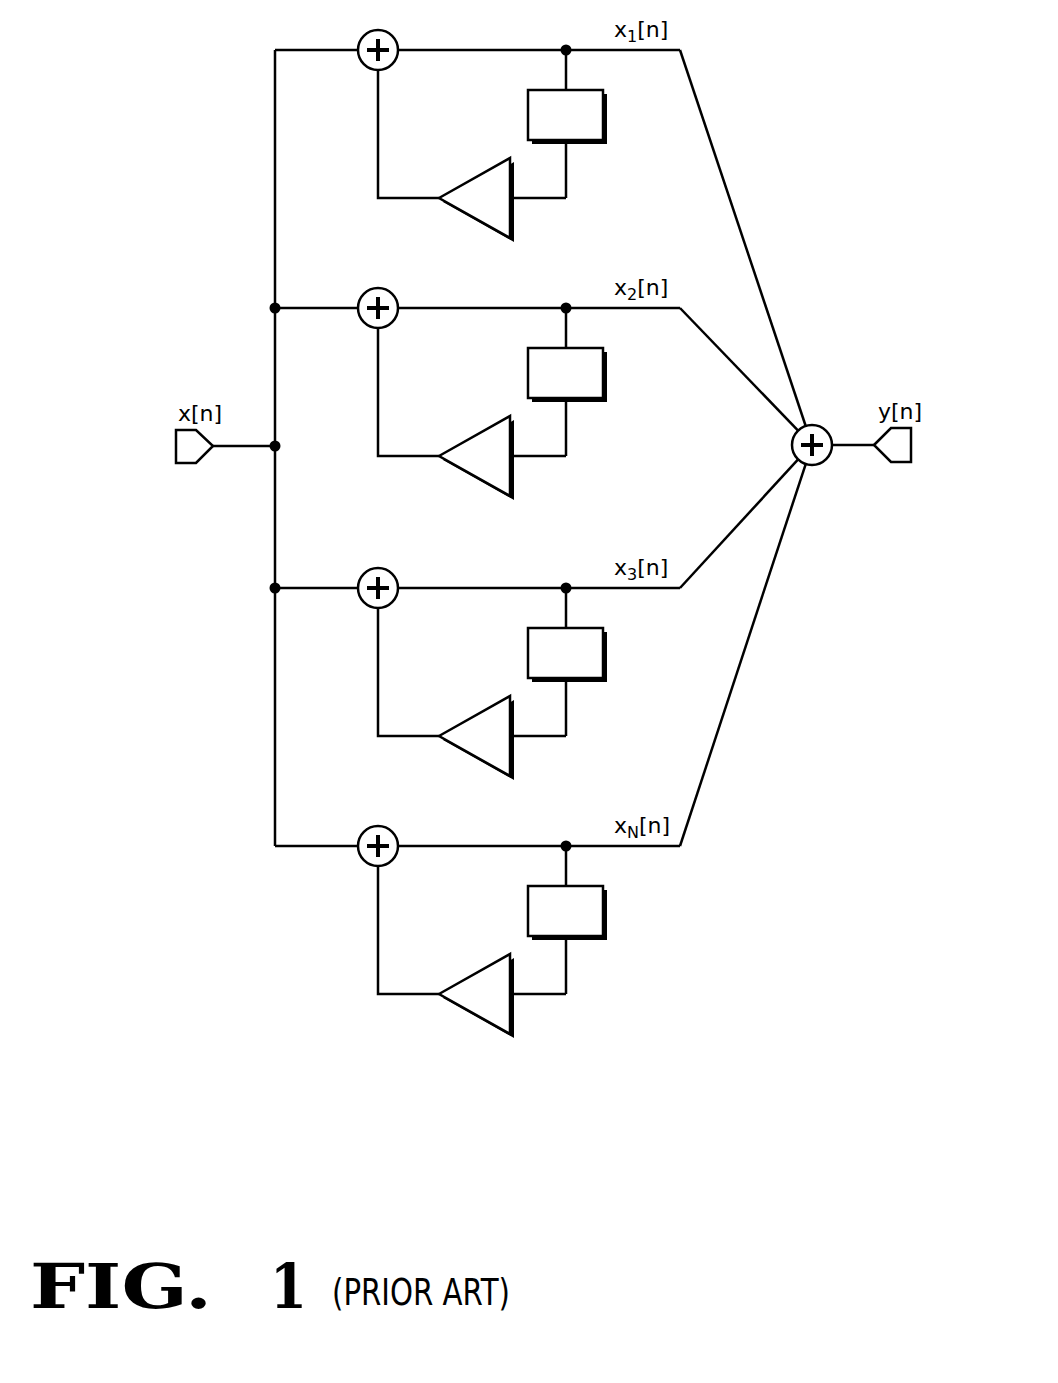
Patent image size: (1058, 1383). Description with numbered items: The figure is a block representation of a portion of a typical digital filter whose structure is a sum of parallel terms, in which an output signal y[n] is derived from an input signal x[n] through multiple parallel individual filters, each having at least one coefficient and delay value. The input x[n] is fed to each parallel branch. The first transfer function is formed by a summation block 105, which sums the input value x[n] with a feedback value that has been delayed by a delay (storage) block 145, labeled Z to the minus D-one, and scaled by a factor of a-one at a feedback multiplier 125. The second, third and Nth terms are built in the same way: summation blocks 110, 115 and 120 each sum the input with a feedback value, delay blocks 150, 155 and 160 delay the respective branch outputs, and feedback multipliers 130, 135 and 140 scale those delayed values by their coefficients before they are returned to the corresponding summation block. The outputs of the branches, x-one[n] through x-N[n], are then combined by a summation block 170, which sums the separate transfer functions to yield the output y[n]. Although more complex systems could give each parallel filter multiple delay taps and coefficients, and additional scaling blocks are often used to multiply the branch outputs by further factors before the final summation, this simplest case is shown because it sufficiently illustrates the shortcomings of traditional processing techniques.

The summation block 105 is at (366, 33).
The summation block 110 is at (366, 291).
The summation block 115 is at (366, 571).
The summation block 120 is at (366, 829).
The feedback multiplier 125 is at (476, 177).
The feedback multiplier 130 is at (476, 435).
The feedback multiplier 135 is at (476, 715).
The feedback multiplier 140 is at (476, 973).
The delay block 145 is at (590, 143).
The delay block 150 is at (590, 401).
The delay block 155 is at (590, 681).
The delay block 160 is at (590, 939).
The summation block 170 is at (826, 460).